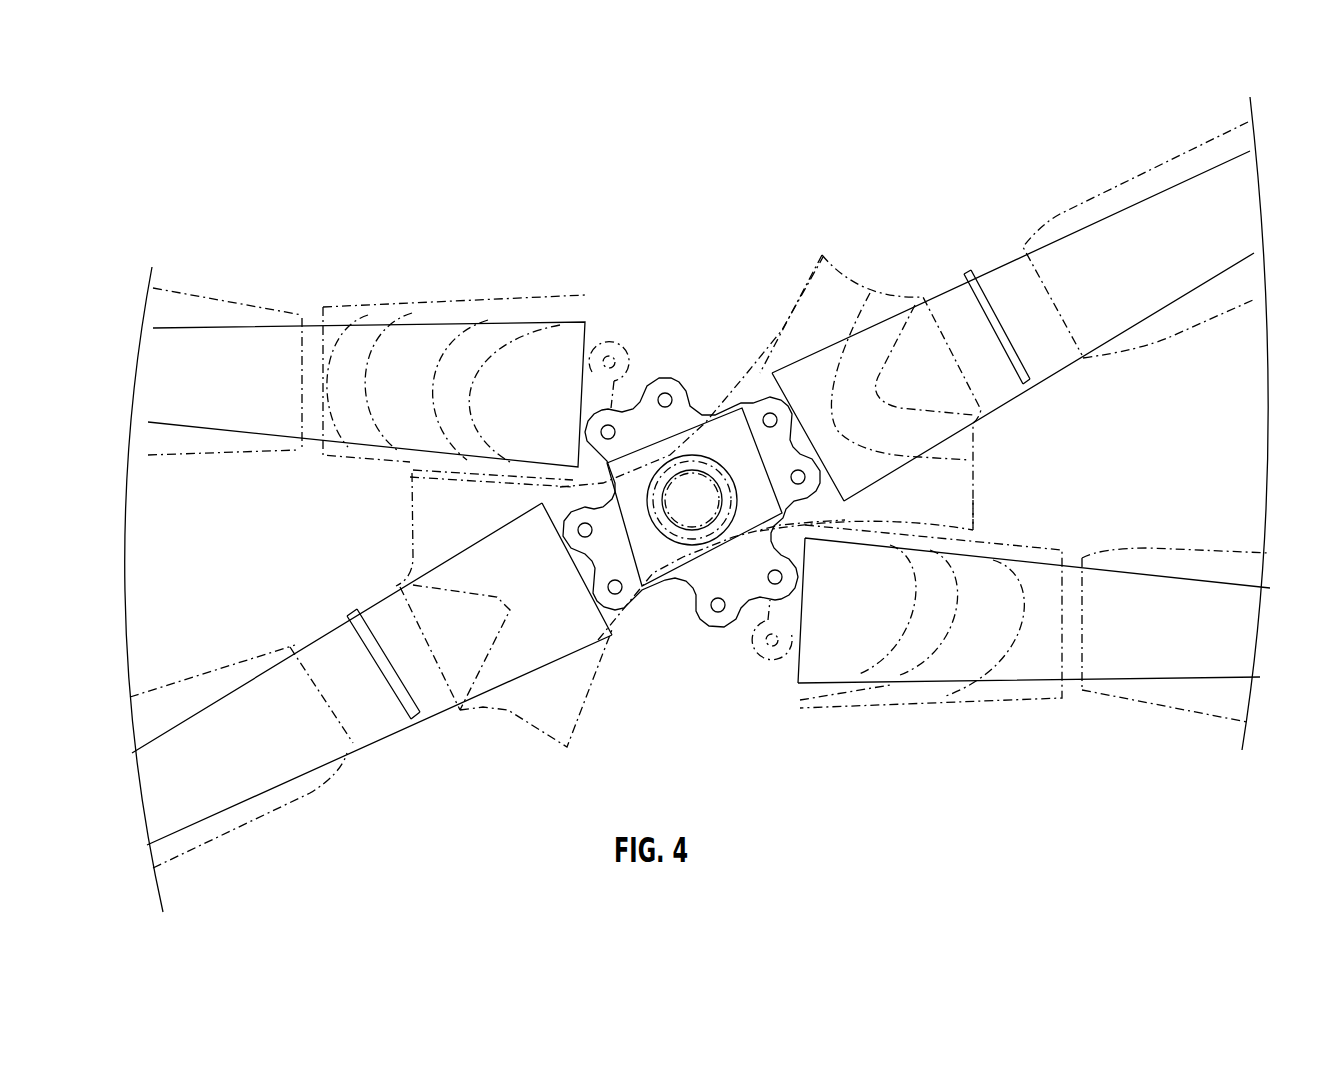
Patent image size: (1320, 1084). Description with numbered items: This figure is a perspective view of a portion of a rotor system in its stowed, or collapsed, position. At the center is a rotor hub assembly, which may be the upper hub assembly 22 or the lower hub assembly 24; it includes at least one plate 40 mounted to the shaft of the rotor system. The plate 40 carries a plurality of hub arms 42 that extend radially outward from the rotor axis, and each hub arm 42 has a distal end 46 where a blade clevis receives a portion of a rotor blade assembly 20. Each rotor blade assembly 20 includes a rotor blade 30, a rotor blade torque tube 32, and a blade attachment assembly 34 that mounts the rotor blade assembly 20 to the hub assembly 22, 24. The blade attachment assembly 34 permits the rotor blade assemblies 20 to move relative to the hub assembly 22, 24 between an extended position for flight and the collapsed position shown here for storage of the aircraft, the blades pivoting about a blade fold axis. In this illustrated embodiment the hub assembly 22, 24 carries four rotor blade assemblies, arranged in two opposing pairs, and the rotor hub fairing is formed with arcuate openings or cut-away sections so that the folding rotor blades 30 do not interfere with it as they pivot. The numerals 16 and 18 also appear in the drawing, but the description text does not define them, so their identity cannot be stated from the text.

The frame assembly 16 is at (243, 118).
The support structure 18 is at (1255, 423).
The rotor blade assembly 20 is at (388, 253).
The upper hub assembly 22 is at (665, 648).
The lower hub assembly 24 is at (702, 497).
The rotor blade 30 is at (218, 292).
The rotor blade torque tube 32 is at (497, 345).
The blade attachment assembly 34 is at (627, 337).
The plate 40 is at (704, 430).
The hub arm 42 is at (647, 407).
The distal end 46 is at (676, 377).